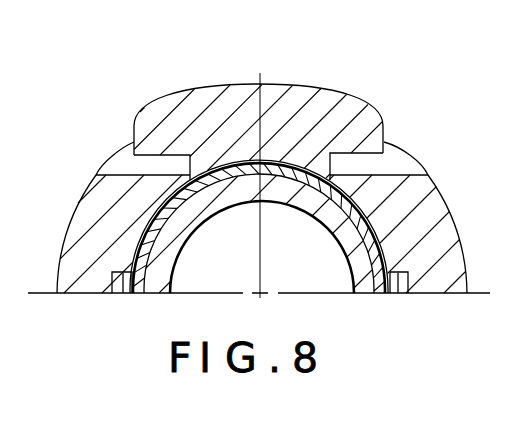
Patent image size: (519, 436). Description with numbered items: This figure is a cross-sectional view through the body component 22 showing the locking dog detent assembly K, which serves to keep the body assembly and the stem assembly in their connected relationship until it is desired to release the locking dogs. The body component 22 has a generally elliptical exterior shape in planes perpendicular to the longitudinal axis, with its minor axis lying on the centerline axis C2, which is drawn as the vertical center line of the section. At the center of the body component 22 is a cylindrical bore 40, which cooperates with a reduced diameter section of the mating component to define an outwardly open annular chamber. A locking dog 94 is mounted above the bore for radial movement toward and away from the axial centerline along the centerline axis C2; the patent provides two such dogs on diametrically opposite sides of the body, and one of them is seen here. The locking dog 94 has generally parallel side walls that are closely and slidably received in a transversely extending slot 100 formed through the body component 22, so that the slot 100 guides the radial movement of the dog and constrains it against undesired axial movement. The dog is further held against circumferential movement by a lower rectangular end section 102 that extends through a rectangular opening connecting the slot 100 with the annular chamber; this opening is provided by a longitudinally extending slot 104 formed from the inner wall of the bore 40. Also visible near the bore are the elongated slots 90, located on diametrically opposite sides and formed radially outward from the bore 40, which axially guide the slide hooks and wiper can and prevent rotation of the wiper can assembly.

The body component 22 is at (100, 197).
The locking dog element 94 is at (336, 115).
The locking dog detent assembly K is at (303, 107).
The transversely extending slot 100 is at (127, 165).
The lower rectangular end section 102 is at (316, 162).
The cylindrical bore 40 is at (374, 238).
The longitudinally extending slot 104 is at (184, 189).
The elongated slot 90 is at (123, 293).
The centerline axis C2 is at (258, 73).